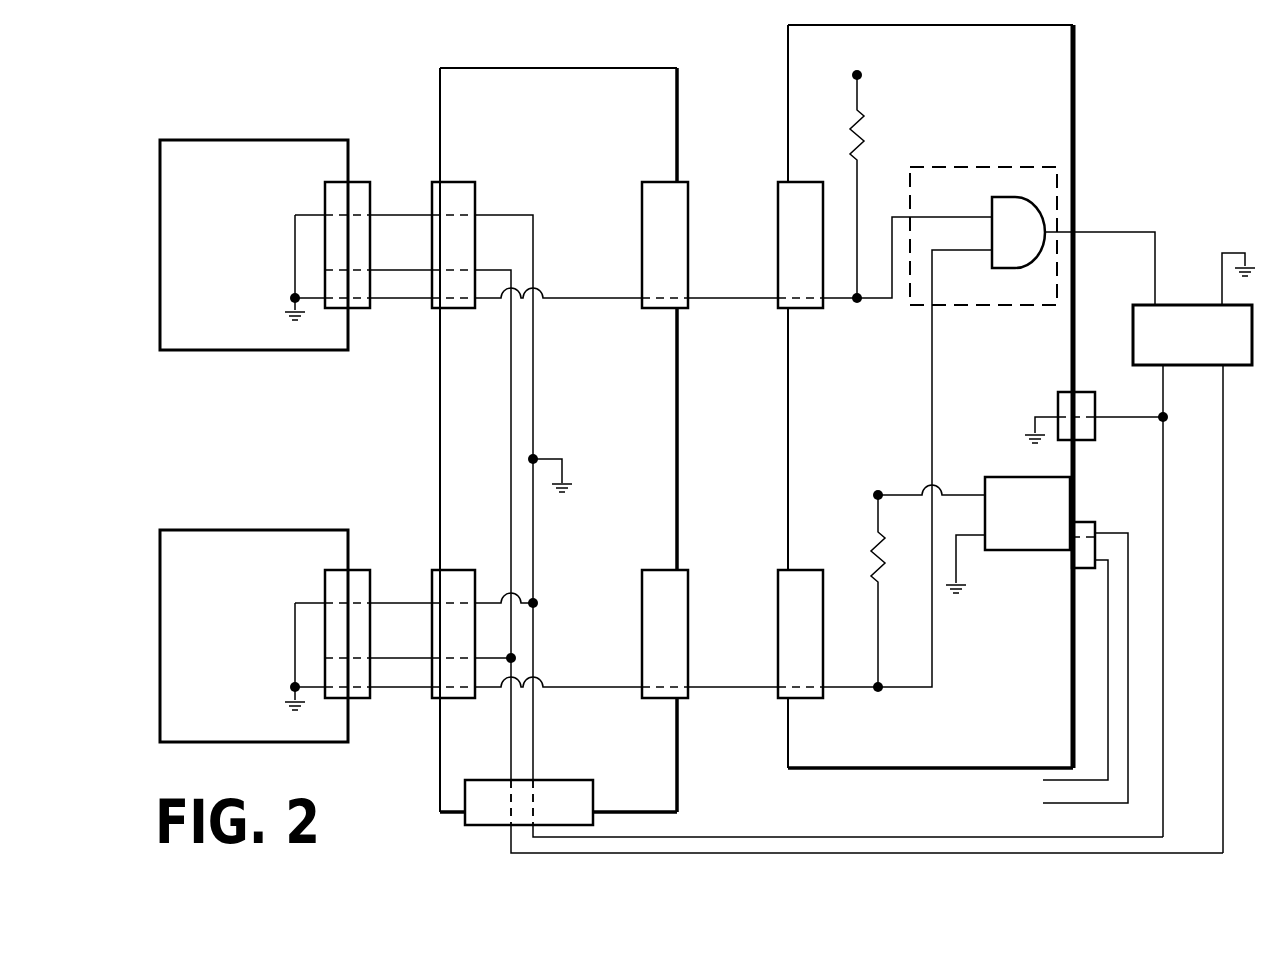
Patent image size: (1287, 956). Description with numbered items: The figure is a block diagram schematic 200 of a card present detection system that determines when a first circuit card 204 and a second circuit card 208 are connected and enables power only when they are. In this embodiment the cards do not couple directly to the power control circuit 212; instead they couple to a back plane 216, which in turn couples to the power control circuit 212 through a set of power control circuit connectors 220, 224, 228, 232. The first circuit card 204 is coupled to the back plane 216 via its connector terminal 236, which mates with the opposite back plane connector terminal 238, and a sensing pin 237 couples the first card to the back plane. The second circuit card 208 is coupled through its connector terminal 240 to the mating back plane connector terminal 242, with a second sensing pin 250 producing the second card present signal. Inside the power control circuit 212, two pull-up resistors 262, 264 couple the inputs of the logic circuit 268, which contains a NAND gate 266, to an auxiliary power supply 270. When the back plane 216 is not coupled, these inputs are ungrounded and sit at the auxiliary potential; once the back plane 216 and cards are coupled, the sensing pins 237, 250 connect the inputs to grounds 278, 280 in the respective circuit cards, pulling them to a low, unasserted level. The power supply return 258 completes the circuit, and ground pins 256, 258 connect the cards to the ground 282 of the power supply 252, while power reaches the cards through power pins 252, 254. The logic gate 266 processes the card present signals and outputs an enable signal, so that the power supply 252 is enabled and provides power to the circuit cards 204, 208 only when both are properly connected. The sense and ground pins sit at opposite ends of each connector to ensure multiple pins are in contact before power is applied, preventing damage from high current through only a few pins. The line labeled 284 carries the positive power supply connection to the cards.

The block diagram schematic 200 is at (1150, 120).
The first circuit card 204 is at (278, 140).
The second circuit card 208 is at (280, 530).
The power control circuit 212 is at (930, 396).
The back plane 216 is at (679, 100).
The power control circuit connector 220 is at (660, 182).
The power control circuit connector 224 is at (780, 182).
The power control circuit connector 228 is at (660, 570).
The power control circuit connector 232 is at (785, 570).
The first circuit card connector terminal 236 is at (358, 182).
The sensing pin 237 is at (405, 300).
The first back plane connector terminal 238 is at (470, 182).
The second circuit card connector terminal 240 is at (358, 570).
The second back plane connector terminal 242 is at (452, 570).
The sensing pin 250 is at (406, 690).
The power supply 252 is at (1138, 318).
The power pin 254 is at (796, 548).
The ground pin 256 is at (416, 593).
The power supply return 258 is at (1230, 253).
The pull-up resistor 262 is at (852, 130).
The pull-up resistor 264 is at (870, 557).
The NAND gate 266 is at (1010, 260).
The logic circuit 268 is at (1000, 166).
The auxiliary power supply 270 is at (853, 73).
The ground 278 is at (290, 310).
The ground 280 is at (290, 700).
The ground 282 is at (1163, 508).
The positive power supply line 284 is at (1224, 552).